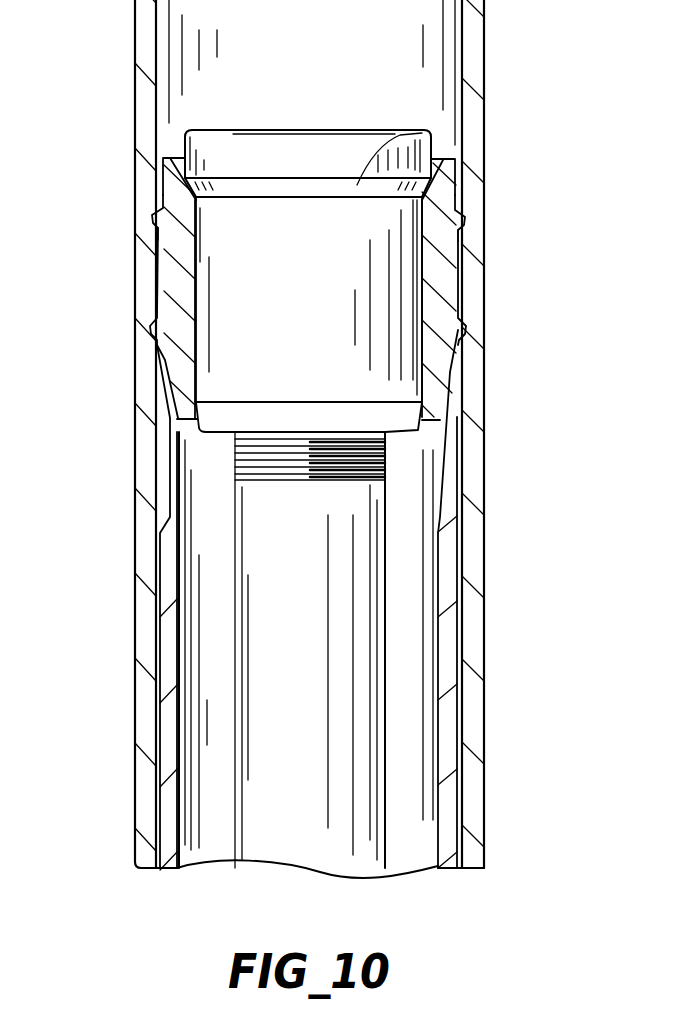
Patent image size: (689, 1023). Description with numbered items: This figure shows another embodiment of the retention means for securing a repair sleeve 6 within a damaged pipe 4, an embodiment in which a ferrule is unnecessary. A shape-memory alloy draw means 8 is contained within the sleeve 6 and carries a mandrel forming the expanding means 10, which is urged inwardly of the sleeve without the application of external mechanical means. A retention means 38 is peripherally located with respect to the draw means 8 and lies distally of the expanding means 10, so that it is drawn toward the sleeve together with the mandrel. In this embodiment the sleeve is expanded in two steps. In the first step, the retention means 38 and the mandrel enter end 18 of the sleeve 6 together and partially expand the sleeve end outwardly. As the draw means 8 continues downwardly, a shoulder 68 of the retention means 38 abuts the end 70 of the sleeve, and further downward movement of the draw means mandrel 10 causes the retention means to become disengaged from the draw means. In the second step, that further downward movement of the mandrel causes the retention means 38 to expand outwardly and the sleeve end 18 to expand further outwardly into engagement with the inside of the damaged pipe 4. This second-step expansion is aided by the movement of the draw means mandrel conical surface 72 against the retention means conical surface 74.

The damaged pipe 4 is at (472, 468).
The repair sleeve 6 is at (445, 650).
The draw means 8 is at (293, 643).
The expanding means 10 is at (270, 378).
The end of the sleeve 18 is at (450, 307).
The retention means 38 is at (182, 302).
The shoulder 68 is at (158, 208).
The end of the sleeve 70 is at (447, 190).
The conical surface of the draw means mandrel 72 is at (360, 185).
The conical surface of the retention means 74 is at (183, 158).